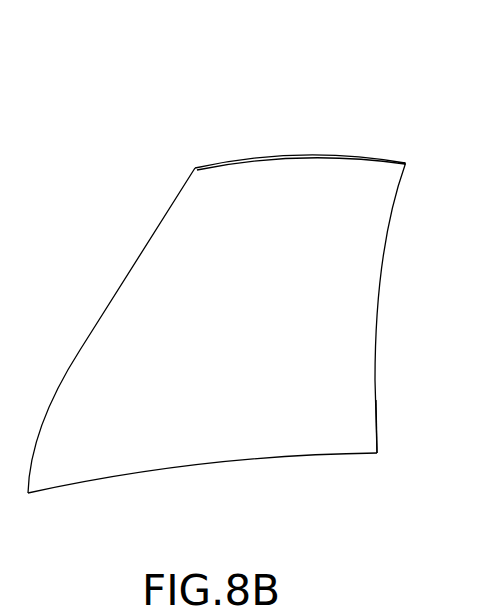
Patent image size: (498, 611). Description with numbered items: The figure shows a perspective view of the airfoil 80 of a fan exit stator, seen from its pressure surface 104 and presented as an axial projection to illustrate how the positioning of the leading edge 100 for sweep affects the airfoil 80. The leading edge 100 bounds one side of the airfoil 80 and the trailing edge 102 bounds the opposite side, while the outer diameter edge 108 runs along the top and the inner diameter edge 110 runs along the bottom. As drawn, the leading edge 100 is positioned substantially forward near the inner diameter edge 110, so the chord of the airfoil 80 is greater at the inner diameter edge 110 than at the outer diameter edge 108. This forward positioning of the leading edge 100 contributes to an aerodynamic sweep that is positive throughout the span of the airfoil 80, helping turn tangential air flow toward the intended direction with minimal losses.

The airfoil 80 is at (256, 297).
The leading edge 100 is at (118, 292).
The trailing edge 102 is at (383, 263).
The pressure surface 104 is at (343, 418).
The outer diameter edge 108 is at (392, 163).
The inner diameter edge 110 is at (120, 476).